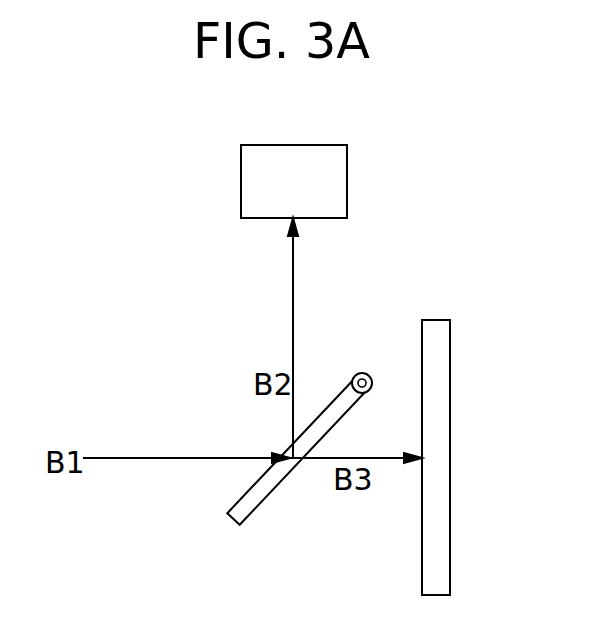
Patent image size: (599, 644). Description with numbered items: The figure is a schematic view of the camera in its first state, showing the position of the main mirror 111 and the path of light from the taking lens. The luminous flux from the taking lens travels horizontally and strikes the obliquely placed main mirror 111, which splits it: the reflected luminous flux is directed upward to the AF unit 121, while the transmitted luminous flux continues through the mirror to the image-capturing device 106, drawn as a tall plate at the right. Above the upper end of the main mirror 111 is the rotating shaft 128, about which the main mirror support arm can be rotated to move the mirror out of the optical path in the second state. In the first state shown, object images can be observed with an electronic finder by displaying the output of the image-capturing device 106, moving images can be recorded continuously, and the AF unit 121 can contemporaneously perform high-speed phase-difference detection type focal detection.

The AF unit 121 is at (333, 145).
The main mirror 111 is at (230, 517).
The rotating shaft 128 is at (364, 373).
The image-capturing device 106 is at (437, 320).